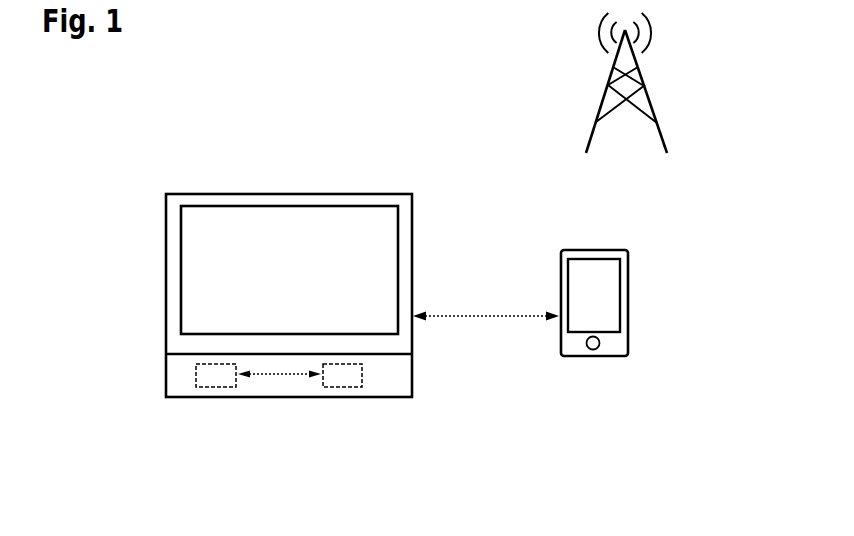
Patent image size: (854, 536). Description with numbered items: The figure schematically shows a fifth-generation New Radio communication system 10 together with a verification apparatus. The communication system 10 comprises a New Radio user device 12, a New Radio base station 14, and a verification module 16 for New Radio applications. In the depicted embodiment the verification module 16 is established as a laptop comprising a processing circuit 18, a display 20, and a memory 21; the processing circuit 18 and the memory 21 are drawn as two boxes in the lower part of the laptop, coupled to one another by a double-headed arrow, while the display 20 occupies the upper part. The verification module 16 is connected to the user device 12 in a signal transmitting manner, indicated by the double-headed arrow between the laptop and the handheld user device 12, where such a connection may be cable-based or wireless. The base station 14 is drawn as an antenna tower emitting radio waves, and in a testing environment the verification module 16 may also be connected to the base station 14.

The communication system 10 is at (450, 104).
The user device 12 is at (628, 295).
The base station 14 is at (652, 103).
The verification module 16 is at (206, 185).
The processing circuit 18 is at (210, 387).
The display 20 is at (197, 251).
The memory 21 is at (348, 387).